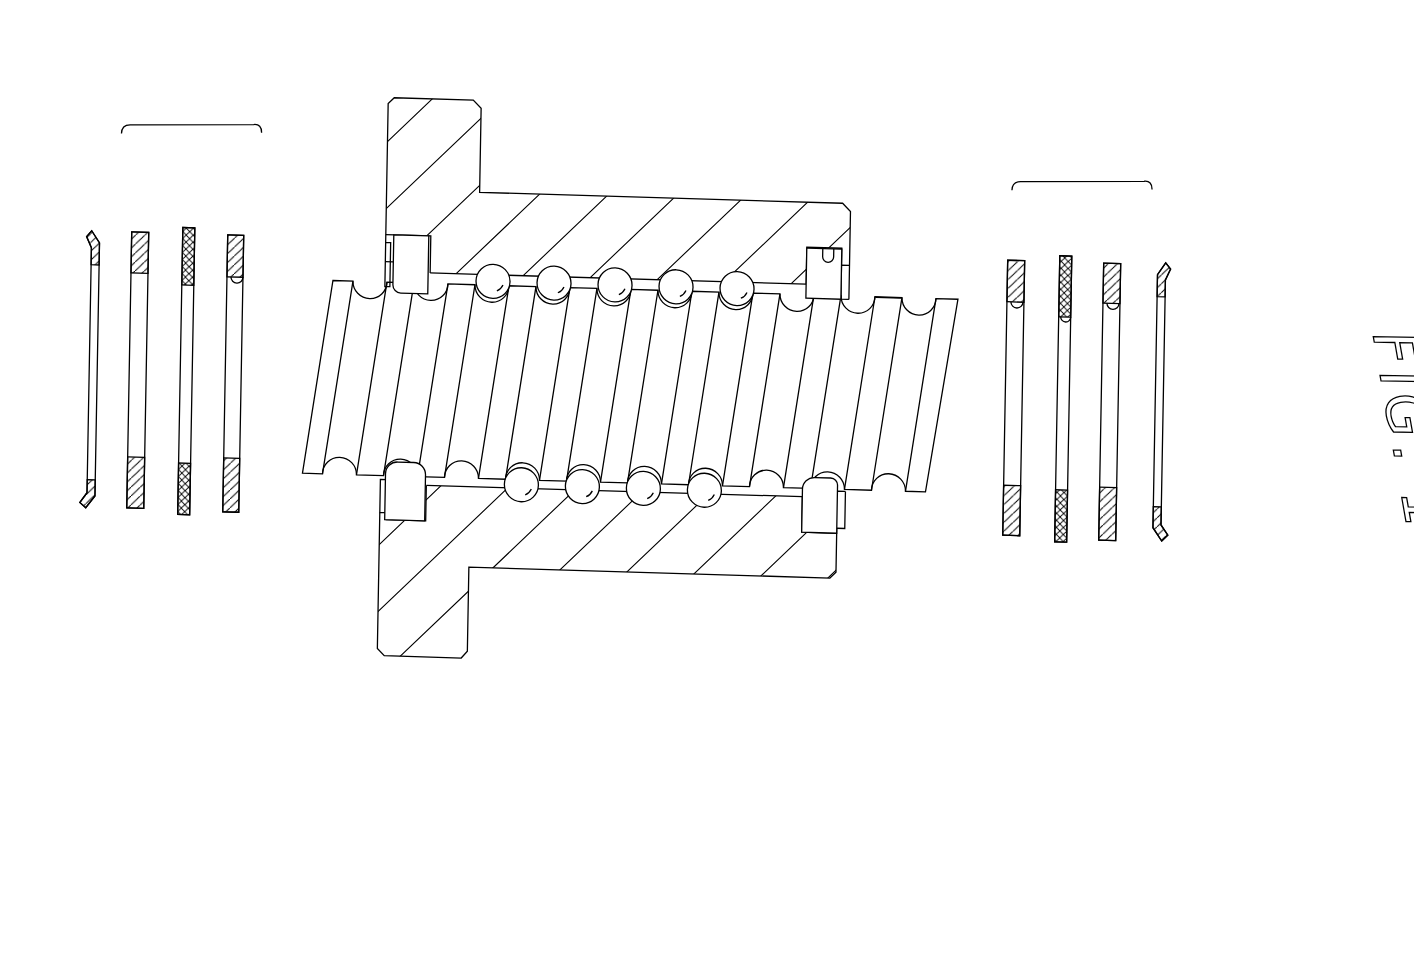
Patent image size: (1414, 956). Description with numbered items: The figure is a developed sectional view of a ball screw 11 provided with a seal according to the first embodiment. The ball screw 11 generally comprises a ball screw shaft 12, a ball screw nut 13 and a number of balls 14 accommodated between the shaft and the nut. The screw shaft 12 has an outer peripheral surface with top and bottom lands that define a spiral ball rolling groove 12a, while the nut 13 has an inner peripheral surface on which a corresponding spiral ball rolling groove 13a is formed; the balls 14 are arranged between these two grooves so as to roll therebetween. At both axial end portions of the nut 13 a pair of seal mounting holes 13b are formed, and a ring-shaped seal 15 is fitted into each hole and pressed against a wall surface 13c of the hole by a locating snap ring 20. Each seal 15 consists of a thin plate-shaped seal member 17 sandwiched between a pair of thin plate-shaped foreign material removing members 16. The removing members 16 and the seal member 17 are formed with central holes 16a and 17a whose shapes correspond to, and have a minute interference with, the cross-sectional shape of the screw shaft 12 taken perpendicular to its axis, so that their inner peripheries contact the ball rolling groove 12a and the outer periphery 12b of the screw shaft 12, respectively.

The ball screw 11 is at (694, 392).
The ball screw shaft 12 is at (648, 345).
The ball rolling groove 12a is at (914, 298).
The outer periphery 12b is at (892, 285).
The ball screw nut 13 is at (756, 199).
The ball rolling groove 13a is at (752, 272).
The seal mounting hole 13b is at (385, 257).
The wall surface 13c is at (386, 262).
The balls 14 is at (677, 272).
The seal 15 is at (637, 140).
The foreign material removing member 16 is at (137, 240).
The central hole 16a is at (243, 293).
The seal member 17 is at (187, 234).
The central hole 17a is at (1069, 303).
The snap ring 20 is at (90, 240).